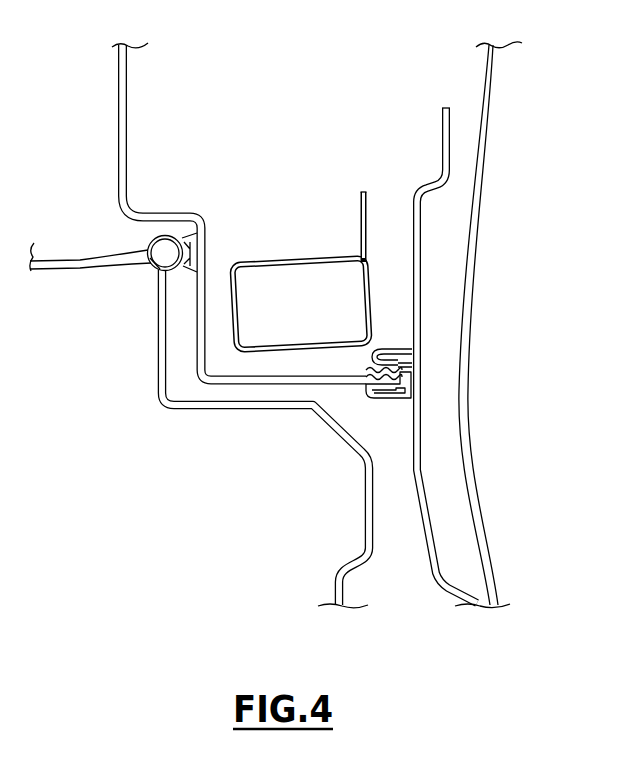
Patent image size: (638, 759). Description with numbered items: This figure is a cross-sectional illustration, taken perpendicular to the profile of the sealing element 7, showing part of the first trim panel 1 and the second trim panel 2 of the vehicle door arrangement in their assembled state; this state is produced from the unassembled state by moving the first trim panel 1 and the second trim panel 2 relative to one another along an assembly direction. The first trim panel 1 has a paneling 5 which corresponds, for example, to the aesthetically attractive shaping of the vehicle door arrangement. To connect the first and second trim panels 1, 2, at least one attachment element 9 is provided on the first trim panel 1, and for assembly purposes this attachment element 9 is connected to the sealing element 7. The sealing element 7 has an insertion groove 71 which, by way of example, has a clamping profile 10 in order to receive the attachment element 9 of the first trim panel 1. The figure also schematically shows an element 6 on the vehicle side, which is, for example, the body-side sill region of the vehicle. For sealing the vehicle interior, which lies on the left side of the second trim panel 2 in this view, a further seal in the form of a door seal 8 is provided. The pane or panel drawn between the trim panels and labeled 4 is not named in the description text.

The first trim panel 1 is at (442, 142).
The second trim panel 2 is at (98, 83).
The trim panel 4 is at (276, 246).
The paneling 5 is at (486, 297).
The element on the vehicle side 6 is at (227, 410).
The sealing element 7 is at (436, 384).
The door seal 8 is at (152, 270).
The attachment element 9 is at (411, 364).
The clamping profile 10 is at (414, 338).
The insertion groove 71 is at (418, 350).